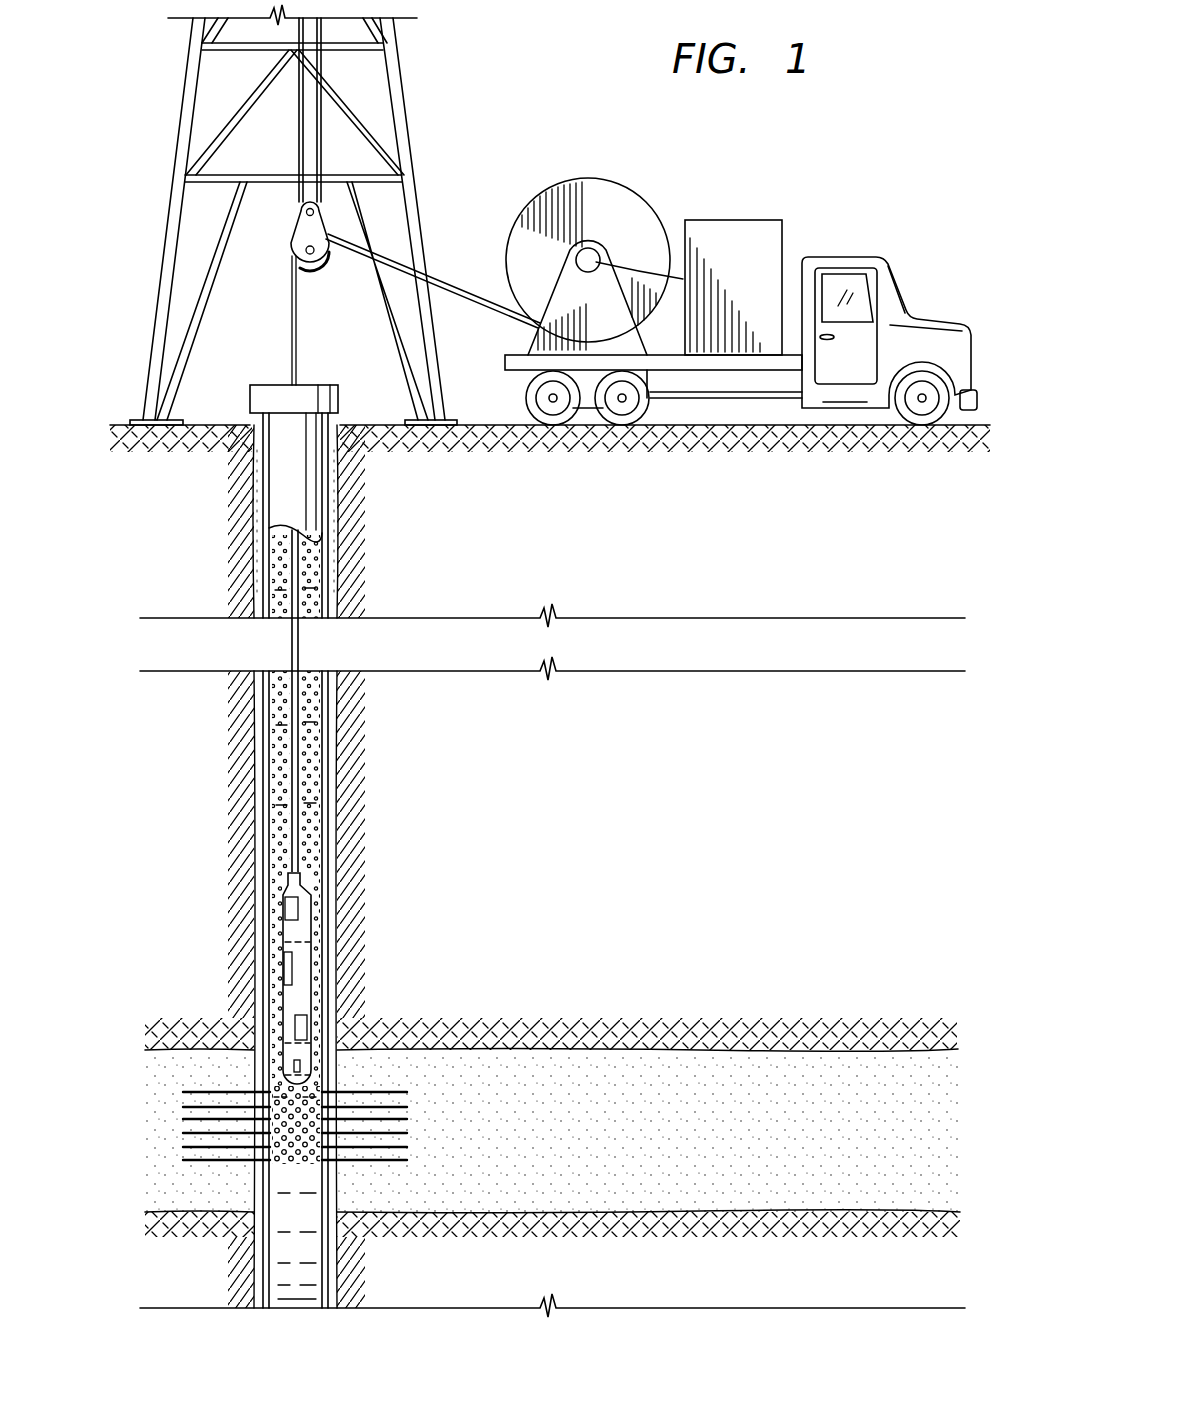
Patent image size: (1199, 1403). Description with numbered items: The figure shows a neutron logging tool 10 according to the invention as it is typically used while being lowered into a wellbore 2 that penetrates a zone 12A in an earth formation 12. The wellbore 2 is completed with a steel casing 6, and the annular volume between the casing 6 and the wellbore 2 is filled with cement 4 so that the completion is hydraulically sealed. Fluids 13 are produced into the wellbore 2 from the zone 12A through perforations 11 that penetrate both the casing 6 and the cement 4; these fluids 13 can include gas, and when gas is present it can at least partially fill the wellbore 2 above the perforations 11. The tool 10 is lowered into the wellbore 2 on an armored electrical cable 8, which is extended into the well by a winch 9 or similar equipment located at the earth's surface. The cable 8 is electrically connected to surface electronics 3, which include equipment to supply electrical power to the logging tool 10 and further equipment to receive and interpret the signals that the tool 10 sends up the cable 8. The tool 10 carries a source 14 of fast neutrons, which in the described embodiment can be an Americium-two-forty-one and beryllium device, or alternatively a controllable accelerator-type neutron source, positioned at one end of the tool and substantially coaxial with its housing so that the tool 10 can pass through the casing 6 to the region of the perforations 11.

The wellbore 2 is at (336, 735).
The surface electronics 3 is at (748, 219).
The cement 4 is at (334, 690).
The steel casing 6 is at (324, 785).
The armored electrical cable 8 is at (451, 289).
The winch 9 is at (313, 270).
The neutron logging tool 10 is at (312, 877).
The perforations 11 is at (210, 1083).
The earth formation 12 is at (585, 885).
The zone 12A is at (681, 1077).
The fluids 13 is at (312, 1108).
The source of fast neutrons 14 is at (334, 546).